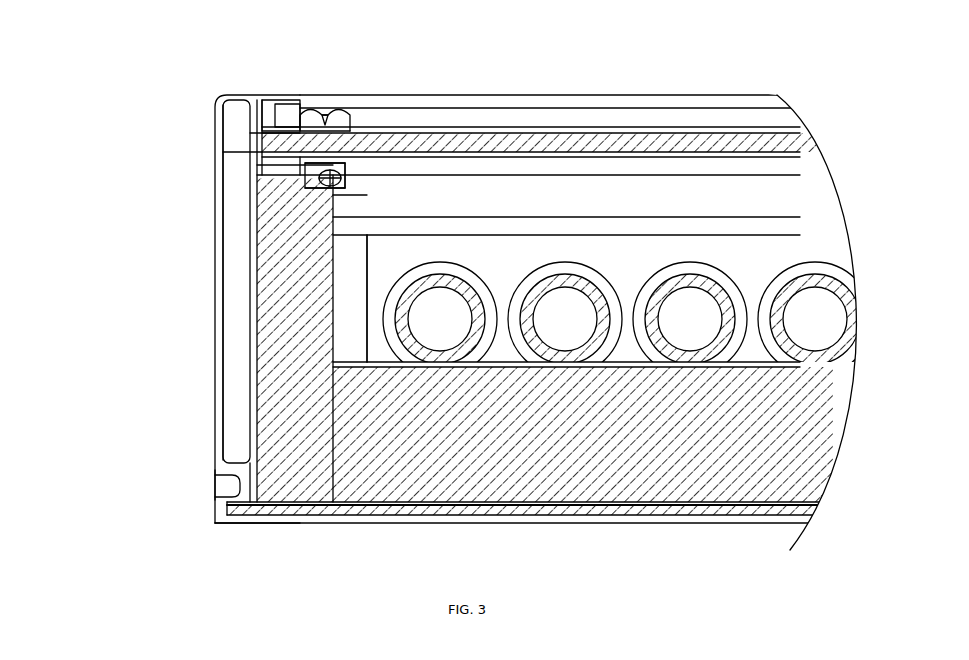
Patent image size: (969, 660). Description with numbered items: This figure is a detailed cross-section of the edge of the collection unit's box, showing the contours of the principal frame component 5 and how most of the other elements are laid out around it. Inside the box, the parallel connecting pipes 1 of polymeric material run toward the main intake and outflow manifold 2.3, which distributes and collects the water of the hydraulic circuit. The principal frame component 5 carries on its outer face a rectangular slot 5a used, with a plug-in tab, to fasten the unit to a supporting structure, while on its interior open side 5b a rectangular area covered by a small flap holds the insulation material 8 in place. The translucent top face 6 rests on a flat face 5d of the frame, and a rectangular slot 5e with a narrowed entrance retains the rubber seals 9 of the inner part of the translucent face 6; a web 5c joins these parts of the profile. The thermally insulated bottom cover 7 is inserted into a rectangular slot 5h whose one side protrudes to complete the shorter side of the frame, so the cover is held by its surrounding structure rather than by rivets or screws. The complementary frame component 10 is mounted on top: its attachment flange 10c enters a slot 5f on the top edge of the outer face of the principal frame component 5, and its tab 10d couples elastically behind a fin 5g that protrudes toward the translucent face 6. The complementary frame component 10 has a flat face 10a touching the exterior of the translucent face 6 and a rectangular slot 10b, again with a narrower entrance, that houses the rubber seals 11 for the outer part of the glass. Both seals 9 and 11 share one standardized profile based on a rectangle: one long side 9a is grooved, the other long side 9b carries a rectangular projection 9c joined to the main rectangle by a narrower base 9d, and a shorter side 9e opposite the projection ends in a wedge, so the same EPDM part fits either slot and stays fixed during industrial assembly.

The parallel connecting pipes 1 is at (837, 281).
The main intake and outflow manifolds 2.3 is at (773, 257).
The principal frame component 5 is at (215, 266).
The rectangular slot / small flap 5a is at (232, 490).
The interior open side 5b is at (246, 316).
The web of frame 5c is at (335, 195).
The flat face 5d is at (300, 172).
The rectangular slot 5e is at (330, 182).
The slot 5f is at (262, 170).
The fin 5g is at (253, 127).
The rectangular slot 5h is at (232, 524).
The translucent top face 6 is at (803, 143).
The bottom cover 7 is at (510, 510).
The insulation material 8 is at (288, 486).
The rubber seals of the inner part 9 is at (343, 170).
The grooved long side 9a is at (347, 178).
The other long side 9b is at (348, 181).
The rectangular projection 9c is at (350, 185).
The base 9d is at (345, 165).
The shorter side ending in a wedge 9e is at (345, 174).
The complementary frame component 10 is at (248, 96).
The flat face 10a is at (337, 108).
The rectangular slot 10b is at (250, 148).
The attachment flange 10c is at (250, 150).
The tab 10d is at (215, 104).
The rubber seals for the outer part 11 is at (338, 120).